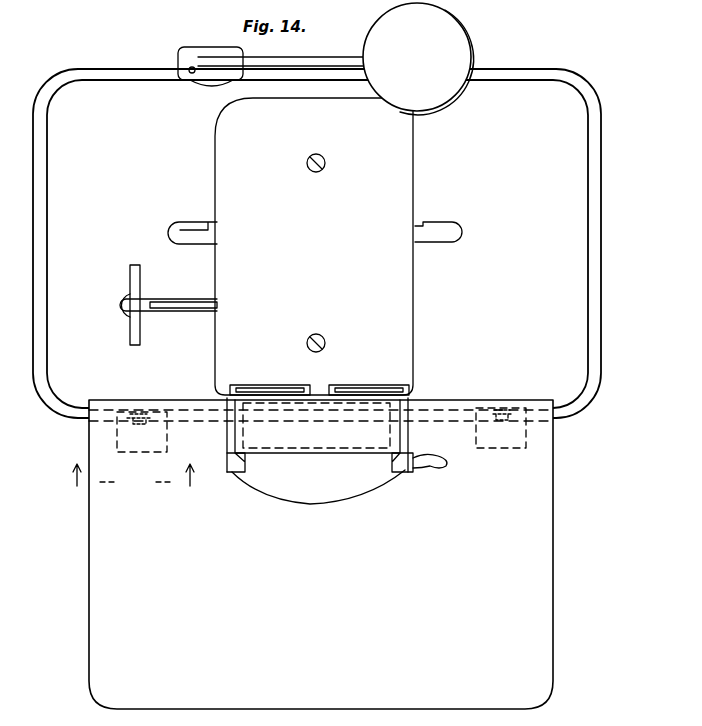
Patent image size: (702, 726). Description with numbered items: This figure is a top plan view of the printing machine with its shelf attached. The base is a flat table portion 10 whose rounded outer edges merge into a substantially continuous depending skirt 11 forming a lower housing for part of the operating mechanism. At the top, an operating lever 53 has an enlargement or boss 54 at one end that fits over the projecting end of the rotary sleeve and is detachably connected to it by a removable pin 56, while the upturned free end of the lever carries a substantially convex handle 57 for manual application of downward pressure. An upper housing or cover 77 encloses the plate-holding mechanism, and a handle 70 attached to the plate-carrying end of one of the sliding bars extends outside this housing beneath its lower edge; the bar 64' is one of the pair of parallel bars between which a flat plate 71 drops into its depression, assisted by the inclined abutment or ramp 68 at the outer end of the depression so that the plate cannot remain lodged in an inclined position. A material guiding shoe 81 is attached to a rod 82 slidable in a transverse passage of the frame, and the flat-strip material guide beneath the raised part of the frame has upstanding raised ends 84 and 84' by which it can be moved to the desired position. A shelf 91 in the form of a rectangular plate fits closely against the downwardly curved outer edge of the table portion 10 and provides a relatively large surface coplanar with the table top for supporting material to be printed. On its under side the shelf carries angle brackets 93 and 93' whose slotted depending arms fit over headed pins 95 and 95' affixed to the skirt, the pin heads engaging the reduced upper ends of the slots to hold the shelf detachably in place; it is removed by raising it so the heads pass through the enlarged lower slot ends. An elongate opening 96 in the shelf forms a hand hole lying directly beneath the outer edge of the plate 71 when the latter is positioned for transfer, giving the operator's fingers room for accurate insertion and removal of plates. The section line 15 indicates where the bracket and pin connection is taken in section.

The table portion 10 is at (317, 244).
The depending skirt 11 is at (597, 168).
The section line 15- 15 is at (128, 487).
The operating lever 53 is at (298, 60).
The boss 54 is at (215, 50).
The removable pin 56 is at (190, 69).
The handle 57 is at (418, 59).
The bar 64' is at (382, 463).
The inclined abutment 68 is at (246, 467).
The handle 70 is at (438, 466).
The plate 71 is at (317, 435).
The upper housing 77 is at (314, 246).
The material guiding shoe 81 is at (130, 280).
The rod 82 is at (185, 313).
The raised end 84 is at (191, 223).
The raised end 84' is at (460, 234).
The shelf 91 is at (553, 528).
The angle bracket 93 is at (109, 432).
The angle bracket 93' is at (533, 428).
The headed pin 95 is at (129, 400).
The headed pin 95' is at (498, 394).
The elongate opening 96 is at (326, 500).